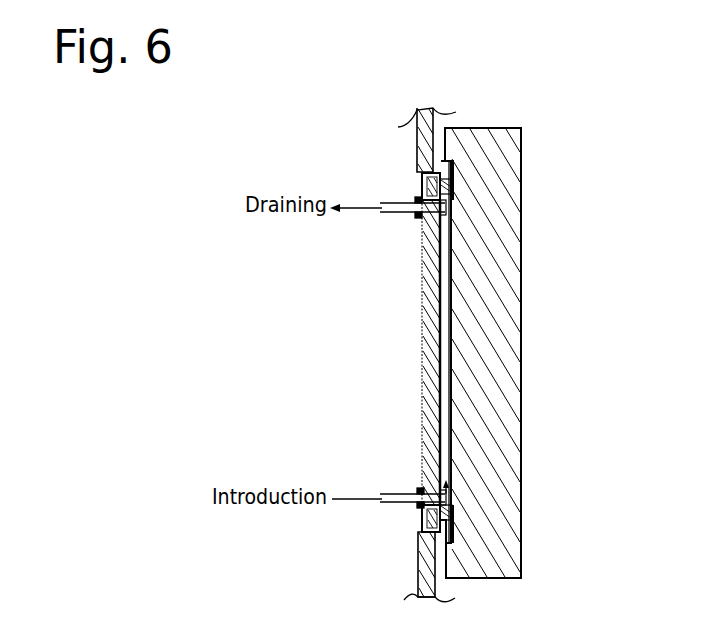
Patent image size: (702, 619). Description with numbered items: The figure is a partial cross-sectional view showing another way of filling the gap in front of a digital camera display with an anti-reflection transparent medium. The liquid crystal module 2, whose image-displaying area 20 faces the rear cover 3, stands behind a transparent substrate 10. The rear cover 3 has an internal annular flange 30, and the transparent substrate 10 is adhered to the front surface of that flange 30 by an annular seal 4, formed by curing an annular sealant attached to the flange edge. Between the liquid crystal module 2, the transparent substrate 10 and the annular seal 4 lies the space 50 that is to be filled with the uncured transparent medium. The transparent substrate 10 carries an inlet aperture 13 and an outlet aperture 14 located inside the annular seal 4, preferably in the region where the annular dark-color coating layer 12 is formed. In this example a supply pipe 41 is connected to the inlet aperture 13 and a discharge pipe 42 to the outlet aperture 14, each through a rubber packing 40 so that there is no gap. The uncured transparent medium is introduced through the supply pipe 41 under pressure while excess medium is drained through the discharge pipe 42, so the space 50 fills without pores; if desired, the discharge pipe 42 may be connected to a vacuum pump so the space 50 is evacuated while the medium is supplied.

The liquid crystal module 2 is at (491, 352).
The rear cover 3 is at (418, 134).
The annular seal 4 is at (453, 190).
The transparent substrate 10 is at (428, 311).
The annular dark-color coating layer 12 is at (418, 182).
The inlet aperture 13 is at (420, 466).
The outlet aperture 14 is at (420, 226).
The image-displaying area 20 is at (455, 378).
The internal annular flange 30 is at (453, 177).
The rubber packing 40 is at (410, 220).
The supply pipe 41 is at (390, 505).
The discharge pipe 42 is at (396, 203).
The space 50 is at (446, 345).